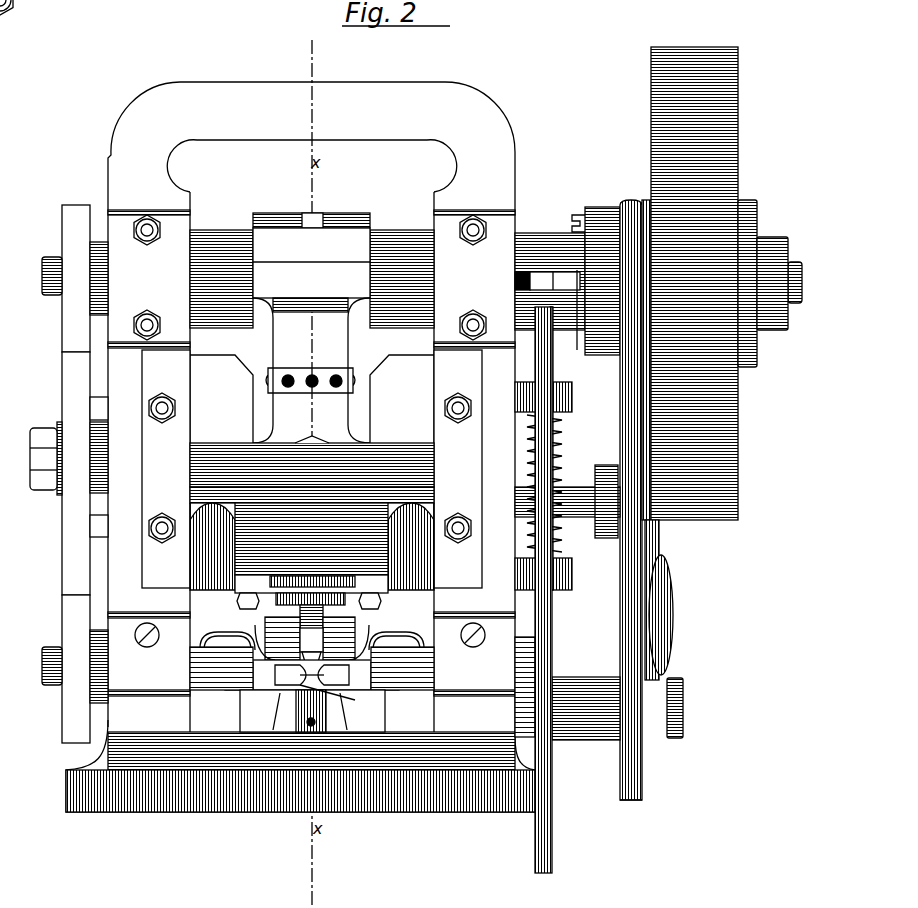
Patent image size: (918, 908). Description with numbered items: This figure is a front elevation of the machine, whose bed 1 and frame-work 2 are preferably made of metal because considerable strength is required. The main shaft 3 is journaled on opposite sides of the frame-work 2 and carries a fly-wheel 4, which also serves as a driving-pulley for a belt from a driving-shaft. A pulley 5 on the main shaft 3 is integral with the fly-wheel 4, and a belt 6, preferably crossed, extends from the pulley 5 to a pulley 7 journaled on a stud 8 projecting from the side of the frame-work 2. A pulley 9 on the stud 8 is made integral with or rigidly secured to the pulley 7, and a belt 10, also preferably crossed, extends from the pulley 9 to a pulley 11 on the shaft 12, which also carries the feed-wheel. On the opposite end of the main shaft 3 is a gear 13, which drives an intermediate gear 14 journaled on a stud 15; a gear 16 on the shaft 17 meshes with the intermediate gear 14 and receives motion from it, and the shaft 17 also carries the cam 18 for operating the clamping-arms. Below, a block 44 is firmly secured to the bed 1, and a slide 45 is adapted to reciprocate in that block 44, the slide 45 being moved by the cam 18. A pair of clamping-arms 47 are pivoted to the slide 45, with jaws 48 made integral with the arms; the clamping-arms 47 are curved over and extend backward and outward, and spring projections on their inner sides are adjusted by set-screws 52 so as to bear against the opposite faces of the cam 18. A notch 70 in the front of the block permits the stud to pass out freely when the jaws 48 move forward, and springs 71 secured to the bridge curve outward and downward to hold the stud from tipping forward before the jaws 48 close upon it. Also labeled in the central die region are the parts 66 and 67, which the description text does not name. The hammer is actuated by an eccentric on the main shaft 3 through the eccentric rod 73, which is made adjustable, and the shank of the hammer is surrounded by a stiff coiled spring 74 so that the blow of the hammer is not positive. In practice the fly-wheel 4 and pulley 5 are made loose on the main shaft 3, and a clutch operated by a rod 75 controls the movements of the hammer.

The bed 1 is at (288, 766).
The frame-work 2 is at (257, 368).
The main shaft 3 is at (42, 273).
The fly-wheel 4 is at (745, 175).
The pulley 5 is at (622, 358).
The belt 6 is at (624, 500).
The pulley 7 is at (642, 780).
The stud 8 is at (592, 740).
The pulley 9 is at (668, 738).
The belt 10 is at (670, 598).
The pulley 11 is at (660, 528).
The shaft 12 is at (578, 512).
The gear 13 is at (85, 278).
The intermediate gear 14 is at (85, 473).
The stud 15 is at (30, 452).
The gear 16 is at (85, 669).
The shaft 17 is at (42, 664).
The cam 18 is at (280, 630).
The block 44 is at (312, 711).
The slide 45 is at (319, 711).
The clamping-arms 47 is at (218, 638).
The jaws 48 is at (334, 699).
The set-screws 52 is at (240, 690).
The punch 66 is at (298, 652).
The guide block 67 is at (312, 676).
The notch 70 is at (290, 688).
The springs 71 is at (275, 658).
The eccentric rod 73 is at (312, 328).
The coiled spring 74 is at (348, 605).
The rod 75 is at (552, 790).